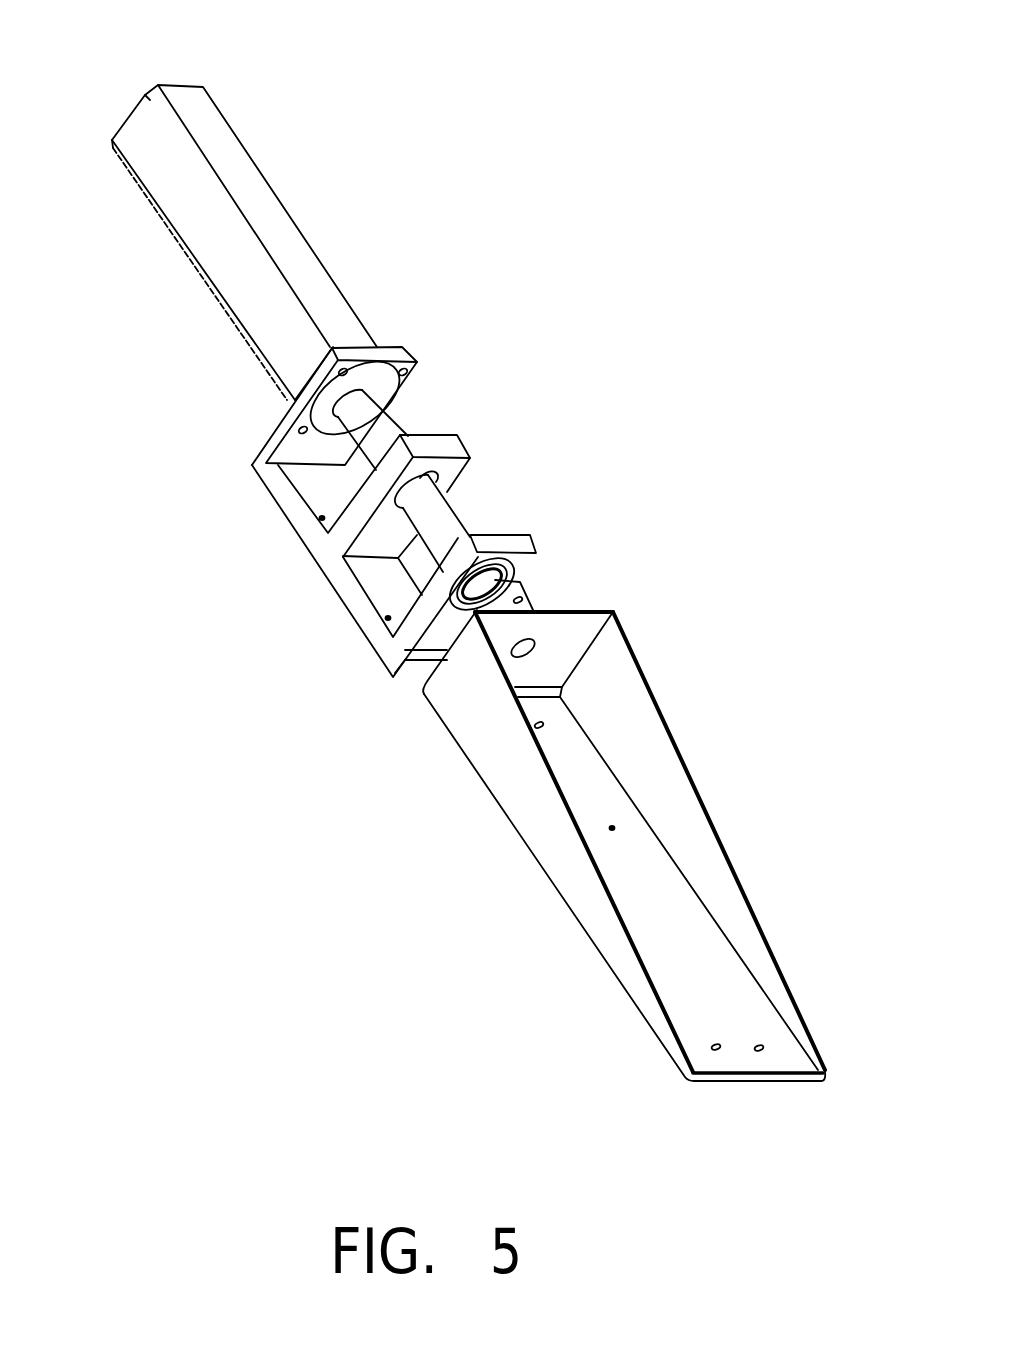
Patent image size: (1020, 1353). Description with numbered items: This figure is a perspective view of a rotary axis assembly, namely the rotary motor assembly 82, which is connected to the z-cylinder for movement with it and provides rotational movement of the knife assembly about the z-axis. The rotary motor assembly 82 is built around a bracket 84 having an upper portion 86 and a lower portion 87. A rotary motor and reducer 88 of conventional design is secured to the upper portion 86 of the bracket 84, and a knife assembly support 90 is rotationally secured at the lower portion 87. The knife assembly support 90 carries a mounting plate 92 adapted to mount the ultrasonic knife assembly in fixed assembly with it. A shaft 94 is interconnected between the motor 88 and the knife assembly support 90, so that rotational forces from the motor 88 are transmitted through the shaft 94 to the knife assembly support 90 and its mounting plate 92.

The rotary motor assembly 82 is at (617, 178).
The bracket 84 is at (330, 548).
The upper portion 86 is at (275, 483).
The lower portion 87 is at (412, 668).
The rotary motor and reducer 88 is at (238, 168).
The knife assembly support 90 is at (622, 682).
The mounting plate 92 is at (655, 908).
The shaft 94 is at (380, 420).